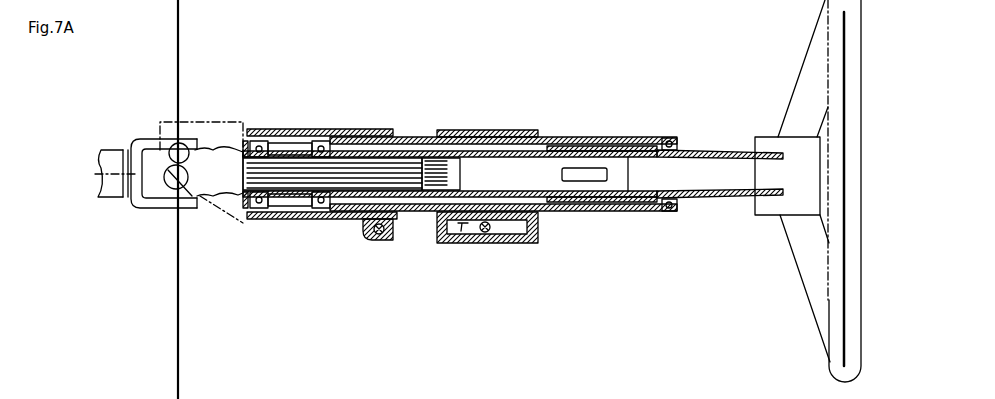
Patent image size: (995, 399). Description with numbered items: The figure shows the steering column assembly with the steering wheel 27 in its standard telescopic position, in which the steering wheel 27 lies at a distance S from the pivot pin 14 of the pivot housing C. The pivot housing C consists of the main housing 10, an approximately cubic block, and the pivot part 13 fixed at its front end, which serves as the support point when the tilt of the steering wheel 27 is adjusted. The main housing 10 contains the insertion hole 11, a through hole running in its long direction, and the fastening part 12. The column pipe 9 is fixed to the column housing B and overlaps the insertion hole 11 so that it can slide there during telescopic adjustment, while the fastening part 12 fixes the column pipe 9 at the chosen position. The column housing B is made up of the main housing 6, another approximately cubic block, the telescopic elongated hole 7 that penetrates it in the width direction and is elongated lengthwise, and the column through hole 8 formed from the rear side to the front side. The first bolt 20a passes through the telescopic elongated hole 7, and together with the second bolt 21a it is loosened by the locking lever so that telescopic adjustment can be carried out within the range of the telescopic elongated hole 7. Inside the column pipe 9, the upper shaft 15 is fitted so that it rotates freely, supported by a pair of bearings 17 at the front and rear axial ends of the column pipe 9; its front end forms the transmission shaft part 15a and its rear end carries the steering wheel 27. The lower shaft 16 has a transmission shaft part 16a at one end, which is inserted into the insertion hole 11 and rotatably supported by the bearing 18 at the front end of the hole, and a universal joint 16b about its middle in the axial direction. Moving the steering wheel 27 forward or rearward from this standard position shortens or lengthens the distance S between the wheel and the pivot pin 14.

The main housing 6 is at (504, 242).
The telescopic elongated hole 7 is at (463, 236).
The column through hole 8 is at (465, 131).
The column pipe 9 is at (423, 137).
The main housing 10 is at (308, 129).
The insertion hole 11 is at (291, 214).
The fastening part 12 is at (392, 240).
The pivot part 13 is at (209, 220).
The pivot pin 14 is at (190, 145).
The upper shaft 15 is at (394, 140).
The transmission shaft part 15a is at (372, 135).
The lower shaft 16 is at (109, 204).
The transmission shaft part 16a is at (343, 220).
The universal joint 16b is at (147, 209).
The bearing 17 is at (322, 214).
The bearing 18 is at (258, 214).
The first bolt 20a is at (485, 236).
The second bolt 21a is at (378, 242).
The steering wheel 27 is at (812, 300).
The column housing B is at (524, 128).
The pivot housing C is at (336, 128).
The distance S is at (178, 33).